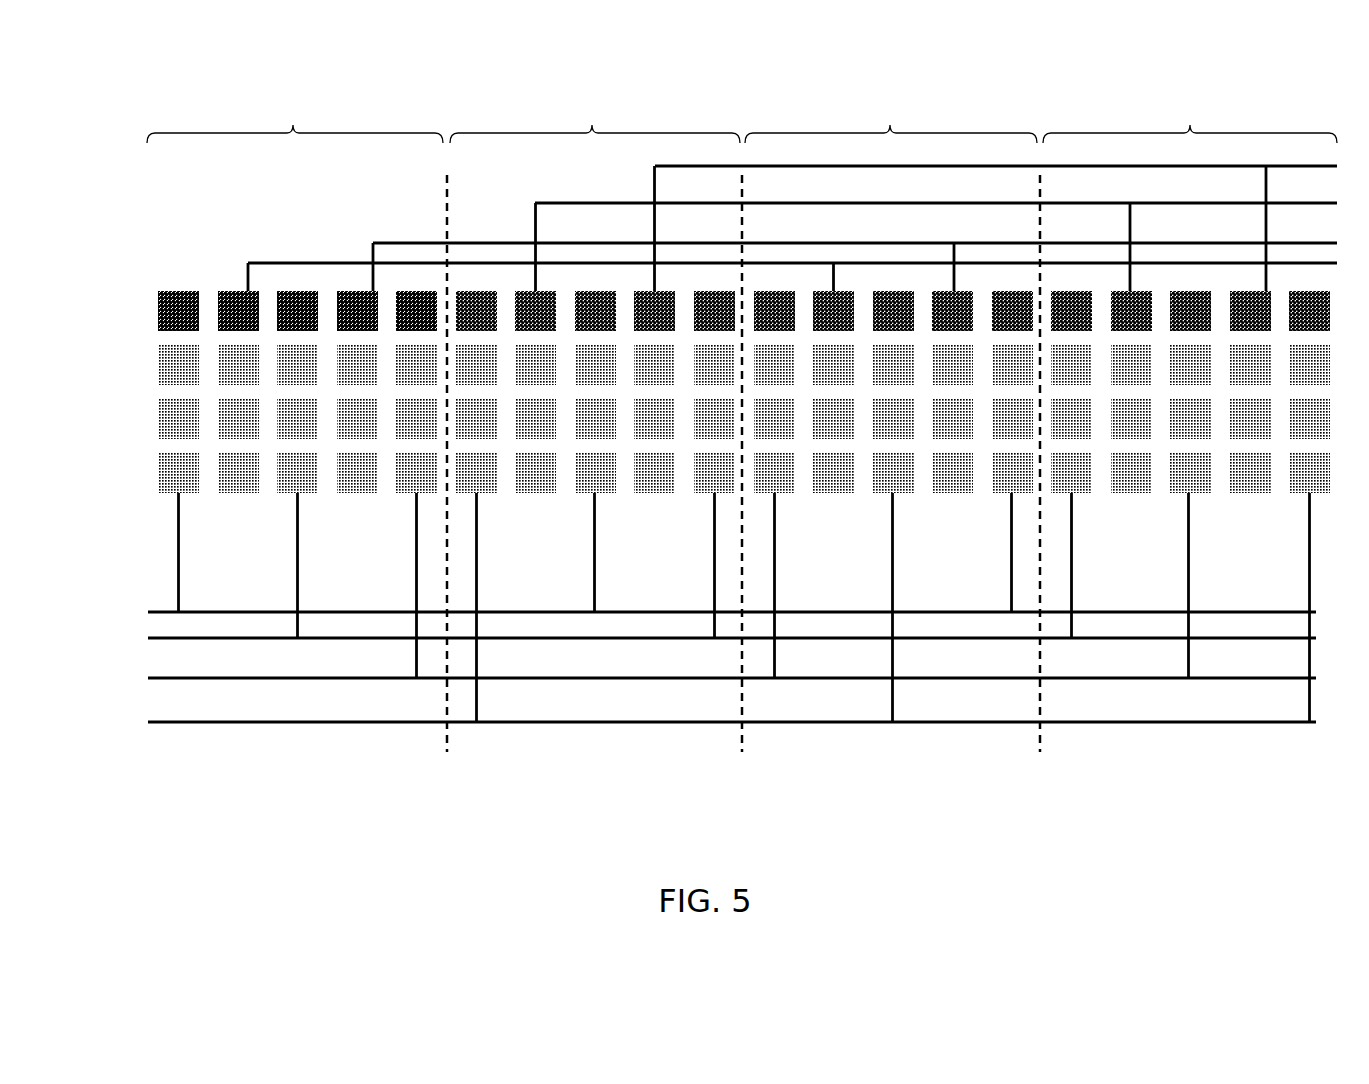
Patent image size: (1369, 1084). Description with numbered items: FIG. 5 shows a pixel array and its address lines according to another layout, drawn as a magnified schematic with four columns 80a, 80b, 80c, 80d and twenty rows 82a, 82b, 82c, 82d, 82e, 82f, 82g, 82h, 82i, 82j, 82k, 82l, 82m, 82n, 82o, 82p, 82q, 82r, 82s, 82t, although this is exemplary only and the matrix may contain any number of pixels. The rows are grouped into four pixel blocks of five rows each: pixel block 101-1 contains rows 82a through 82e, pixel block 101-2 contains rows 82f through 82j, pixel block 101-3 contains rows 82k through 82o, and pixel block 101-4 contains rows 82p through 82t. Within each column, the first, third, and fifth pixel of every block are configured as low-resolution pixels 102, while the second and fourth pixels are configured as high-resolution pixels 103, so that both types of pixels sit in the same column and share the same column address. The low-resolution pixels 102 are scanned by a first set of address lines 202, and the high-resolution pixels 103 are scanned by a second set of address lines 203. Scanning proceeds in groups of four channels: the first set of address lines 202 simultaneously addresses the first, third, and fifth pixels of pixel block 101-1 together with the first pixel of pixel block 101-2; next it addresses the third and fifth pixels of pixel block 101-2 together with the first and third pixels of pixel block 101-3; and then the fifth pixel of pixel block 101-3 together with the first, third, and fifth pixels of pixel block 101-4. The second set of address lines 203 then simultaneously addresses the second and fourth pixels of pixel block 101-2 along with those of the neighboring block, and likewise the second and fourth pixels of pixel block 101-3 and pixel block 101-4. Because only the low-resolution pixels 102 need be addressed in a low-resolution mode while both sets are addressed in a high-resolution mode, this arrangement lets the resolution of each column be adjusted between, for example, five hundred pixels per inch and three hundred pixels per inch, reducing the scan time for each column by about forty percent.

The column 80a is at (153, 305).
The column 80b is at (152, 360).
The column 80c is at (152, 415).
The column 80d is at (152, 468).
The row 82a is at (164, 507).
The row 82b is at (225, 507).
The row 82c is at (284, 507).
The row 82d is at (346, 507).
The row 82e is at (405, 507).
The row 82f is at (485, 507).
The row 82g is at (523, 507).
The row 82h is at (583, 507).
The row 82i is at (643, 507).
The row 82j is at (703, 507).
The row 82k is at (782, 507).
The row 82l is at (824, 507).
The row 82m is at (878, 507).
The row 82n is at (938, 507).
The row 82o is at (1003, 507).
The row 82p is at (1080, 507).
The row 82q is at (1119, 507).
The row 82r is at (1175, 507).
The row 82s is at (1235, 507).
The row 82t is at (1297, 507).
The pixel block 101-1 is at (293, 123).
The pixel block 101-2 is at (592, 123).
The pixel block 101-3 is at (890, 123).
The pixel block 101-4 is at (1190, 123).
The low-resolution pixels 102 is at (179, 290).
The high-resolution pixels 103 is at (235, 290).
The first set of address lines 202 is at (237, 746).
The second set of address lines 203 is at (605, 175).